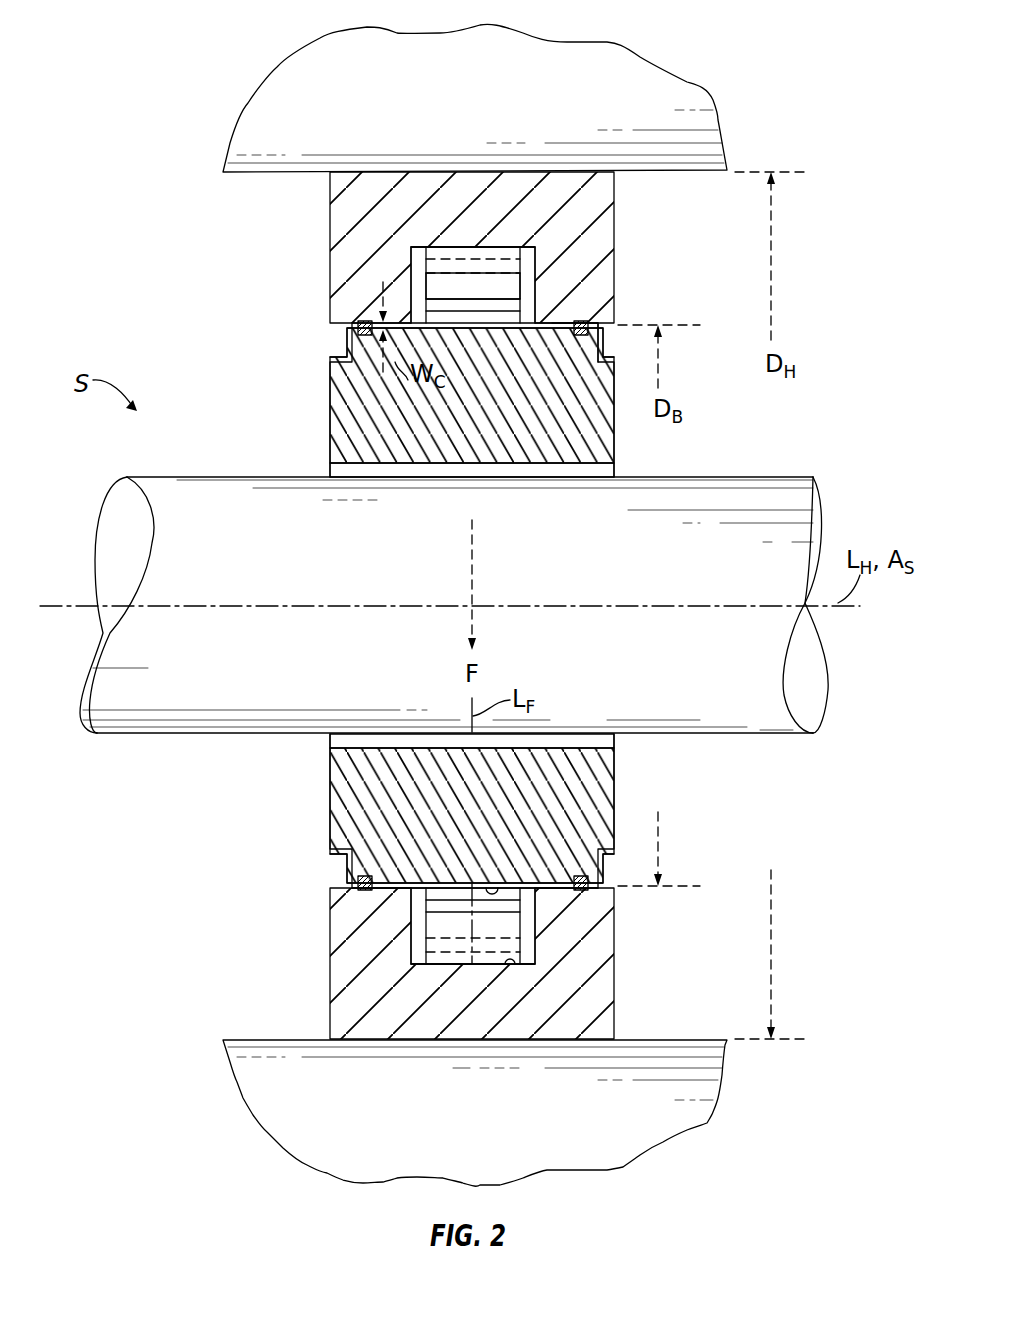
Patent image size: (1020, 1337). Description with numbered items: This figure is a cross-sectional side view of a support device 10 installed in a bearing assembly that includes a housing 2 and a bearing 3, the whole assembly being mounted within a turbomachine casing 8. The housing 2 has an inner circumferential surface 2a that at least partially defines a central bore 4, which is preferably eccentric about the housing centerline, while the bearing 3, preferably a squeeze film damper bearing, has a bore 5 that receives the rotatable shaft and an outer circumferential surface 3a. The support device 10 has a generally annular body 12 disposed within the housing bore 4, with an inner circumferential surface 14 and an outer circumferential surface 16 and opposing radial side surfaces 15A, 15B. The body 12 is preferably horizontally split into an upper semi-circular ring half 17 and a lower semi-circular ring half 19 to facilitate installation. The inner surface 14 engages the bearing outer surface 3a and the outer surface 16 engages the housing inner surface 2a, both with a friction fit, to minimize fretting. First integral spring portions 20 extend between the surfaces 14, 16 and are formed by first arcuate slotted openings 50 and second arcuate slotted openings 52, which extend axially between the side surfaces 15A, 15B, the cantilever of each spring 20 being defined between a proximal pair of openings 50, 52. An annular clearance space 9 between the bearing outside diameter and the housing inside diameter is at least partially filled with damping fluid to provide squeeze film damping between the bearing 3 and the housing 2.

The housing 2 is at (268, 225).
The inner circumferential surface 2a is at (515, 966).
The bearing 3 is at (313, 410).
The outer circumferential surface 3a is at (497, 884).
The central bore 4 is at (540, 256).
The bore 5 is at (550, 472).
The turbomachine casing 8 is at (618, 82).
The annular clearance space 9 is at (552, 322).
The support device 10 is at (407, 256).
The annular body 12 is at (422, 283).
The inner circumferential surface 14 is at (438, 883).
The radial side surface 15A is at (412, 930).
The radial side surface 15B is at (535, 921).
The outer circumferential surface 16 is at (433, 966).
The upper semi-circular ring half 17 is at (430, 240).
The lower semi-circular ring half 19 is at (487, 960).
The first integral spring portion 20 is at (516, 287).
The first arcuate slotted opening 50 is at (466, 312).
The second arcuate slotted opening 52 is at (466, 262).